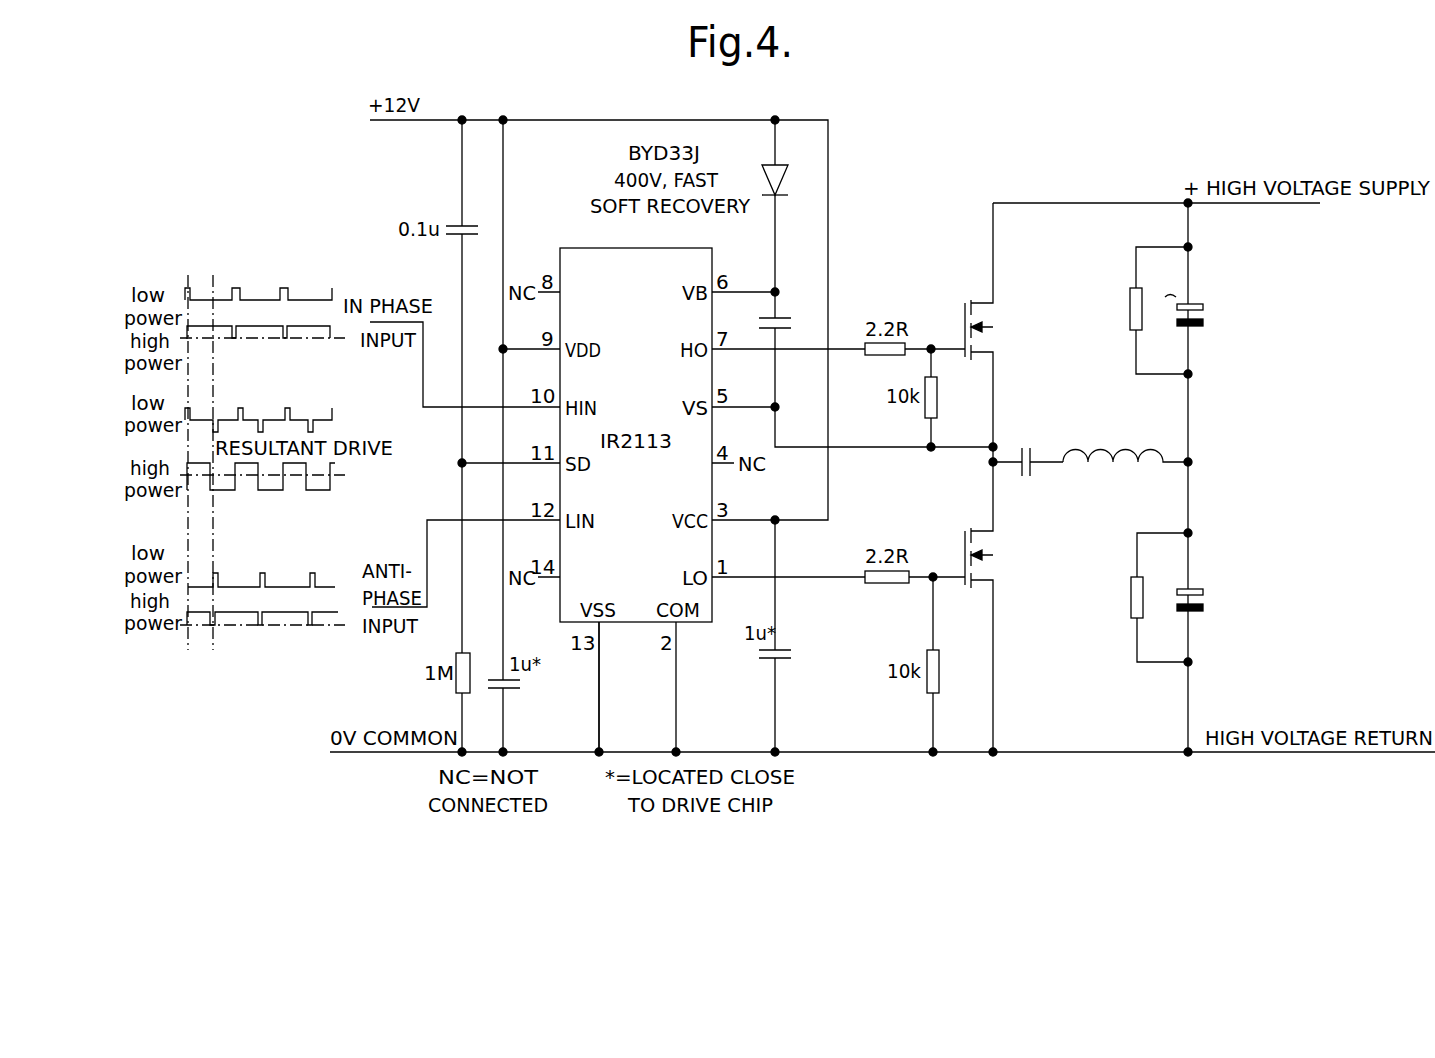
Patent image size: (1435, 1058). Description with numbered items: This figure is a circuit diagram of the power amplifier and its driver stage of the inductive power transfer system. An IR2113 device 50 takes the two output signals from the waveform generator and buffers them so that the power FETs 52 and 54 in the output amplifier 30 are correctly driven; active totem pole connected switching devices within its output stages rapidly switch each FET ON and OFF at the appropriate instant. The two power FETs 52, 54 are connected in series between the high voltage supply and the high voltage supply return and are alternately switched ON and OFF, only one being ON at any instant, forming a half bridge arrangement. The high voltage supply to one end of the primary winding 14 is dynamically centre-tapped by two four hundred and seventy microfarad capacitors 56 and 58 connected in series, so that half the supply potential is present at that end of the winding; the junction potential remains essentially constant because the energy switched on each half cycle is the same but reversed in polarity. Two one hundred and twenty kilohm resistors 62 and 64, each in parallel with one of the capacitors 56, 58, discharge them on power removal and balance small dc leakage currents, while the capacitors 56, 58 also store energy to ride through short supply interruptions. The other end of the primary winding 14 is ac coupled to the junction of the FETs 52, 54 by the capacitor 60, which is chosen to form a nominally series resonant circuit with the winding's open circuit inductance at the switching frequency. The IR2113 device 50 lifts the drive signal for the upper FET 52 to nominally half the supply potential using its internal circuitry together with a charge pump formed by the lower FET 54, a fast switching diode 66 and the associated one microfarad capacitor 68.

The primary power transmitting winding 14 is at (1113, 443).
The output amplifier 30 is at (866, 826).
The IR2113 device 50 is at (630, 622).
The power FET 52 is at (985, 300).
The power FET 54 is at (998, 570).
The 470 µF capacitor 56 is at (1197, 330).
The 470 µF capacitor 58 is at (1197, 588).
The capacitor 60 is at (1030, 415).
The 120 kΩ resistor 62 is at (1133, 290).
The 120 kΩ resistor 64 is at (1132, 577).
The fast switching diode 66 is at (775, 170).
The 1 µF capacitor 68 is at (796, 292).